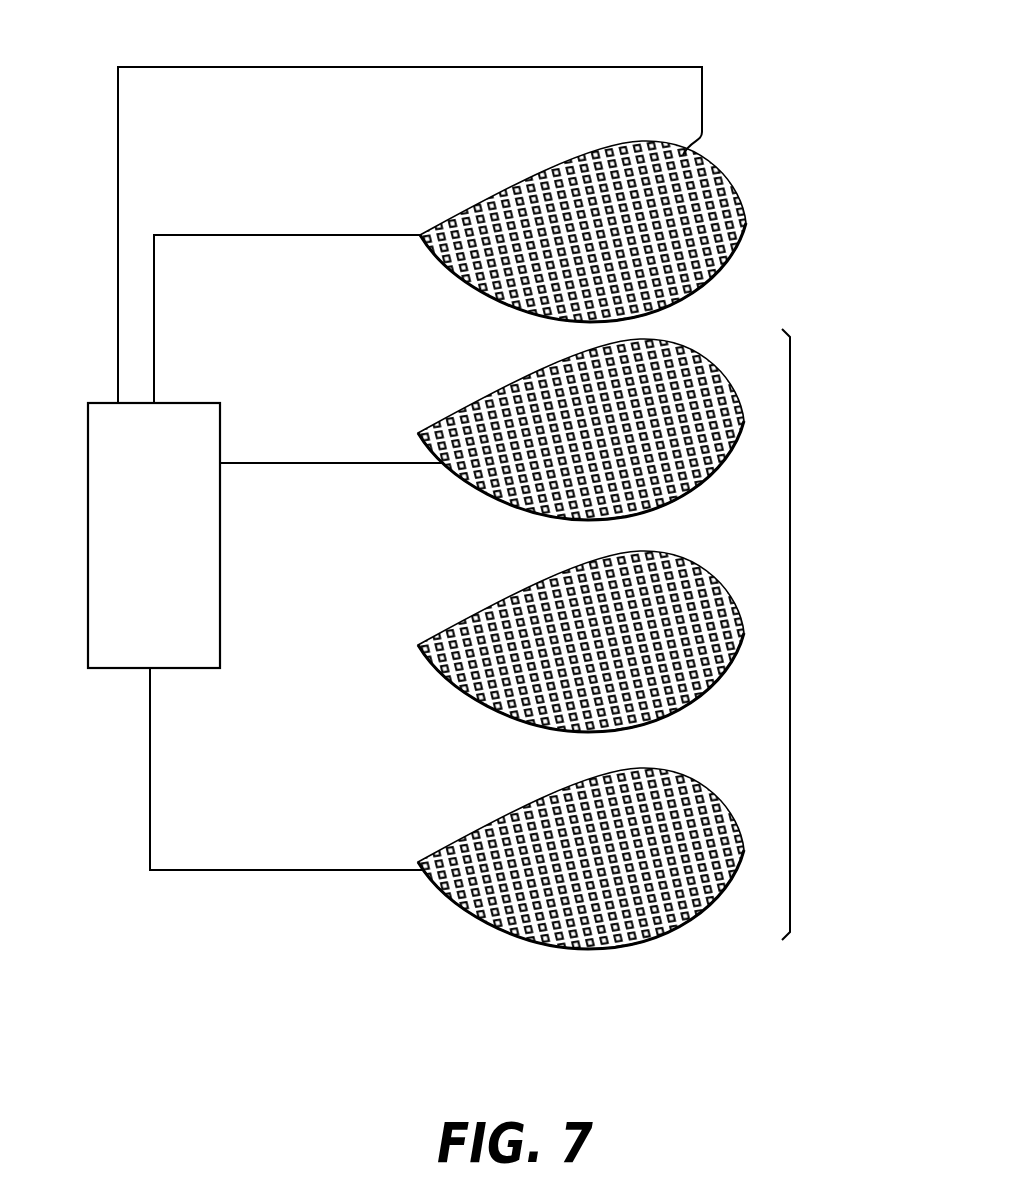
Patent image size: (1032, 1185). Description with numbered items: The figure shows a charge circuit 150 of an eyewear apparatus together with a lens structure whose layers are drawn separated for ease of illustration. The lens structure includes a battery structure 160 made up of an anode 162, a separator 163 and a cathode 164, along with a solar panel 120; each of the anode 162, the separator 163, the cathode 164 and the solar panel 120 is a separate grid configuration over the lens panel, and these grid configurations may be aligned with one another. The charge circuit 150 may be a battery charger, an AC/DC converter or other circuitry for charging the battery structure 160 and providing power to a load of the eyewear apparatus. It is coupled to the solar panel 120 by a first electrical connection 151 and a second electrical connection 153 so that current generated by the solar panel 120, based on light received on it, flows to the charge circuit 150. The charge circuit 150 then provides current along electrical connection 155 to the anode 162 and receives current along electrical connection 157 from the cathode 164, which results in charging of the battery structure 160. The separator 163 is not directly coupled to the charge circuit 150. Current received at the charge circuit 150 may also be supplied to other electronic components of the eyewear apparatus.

The solar panel 120 is at (698, 165).
The charge circuit 150 is at (101, 403).
The first electrical connection 151 is at (310, 67).
The second electrical connection 153 is at (252, 235).
The electrical connection 155 is at (245, 870).
The electrical connection 157 is at (298, 463).
The battery structure 160 is at (790, 610).
The anode 162 is at (708, 806).
The separator 163 is at (720, 576).
The cathode 164 is at (720, 389).